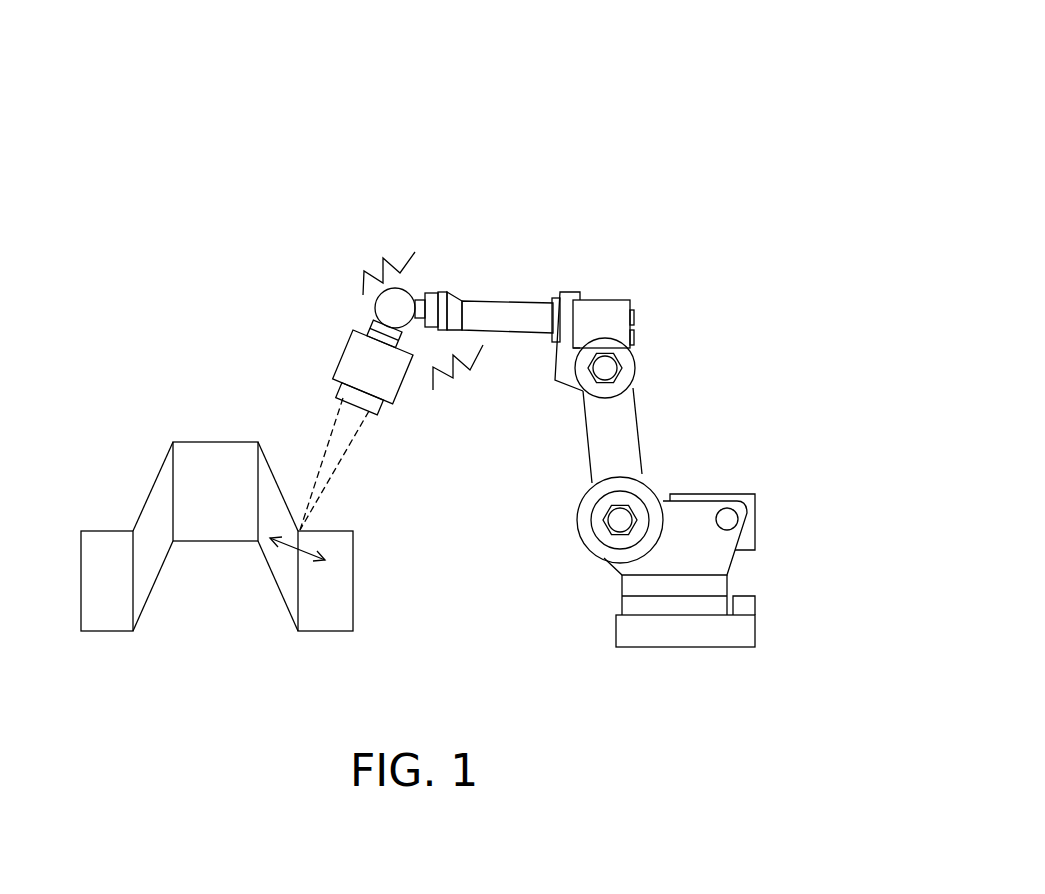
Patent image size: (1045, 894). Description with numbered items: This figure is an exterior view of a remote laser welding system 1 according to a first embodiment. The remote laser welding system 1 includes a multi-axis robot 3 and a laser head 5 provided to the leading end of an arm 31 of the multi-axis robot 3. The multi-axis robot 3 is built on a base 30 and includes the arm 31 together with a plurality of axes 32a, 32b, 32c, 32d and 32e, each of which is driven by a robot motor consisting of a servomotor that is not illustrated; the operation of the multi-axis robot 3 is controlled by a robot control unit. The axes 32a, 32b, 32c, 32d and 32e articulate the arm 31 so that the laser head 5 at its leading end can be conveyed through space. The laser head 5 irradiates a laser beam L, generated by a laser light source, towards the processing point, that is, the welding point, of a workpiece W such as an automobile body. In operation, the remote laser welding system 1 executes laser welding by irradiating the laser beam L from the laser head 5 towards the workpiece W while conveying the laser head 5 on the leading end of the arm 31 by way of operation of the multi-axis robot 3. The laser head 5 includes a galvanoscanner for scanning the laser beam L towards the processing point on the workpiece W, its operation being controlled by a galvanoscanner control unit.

The remote laser welding system 1 is at (657, 102).
The multi-axis robot 3 is at (668, 278).
The laser head 5 is at (342, 352).
The base 30 is at (695, 633).
The arm 31 is at (515, 290).
The axis 32a is at (650, 483).
The axis 32b is at (638, 365).
The axis 32c is at (602, 298).
The axis 32d is at (412, 288).
The axis 32e is at (376, 322).
The workpiece W is at (153, 520).
The laser beam L is at (335, 477).